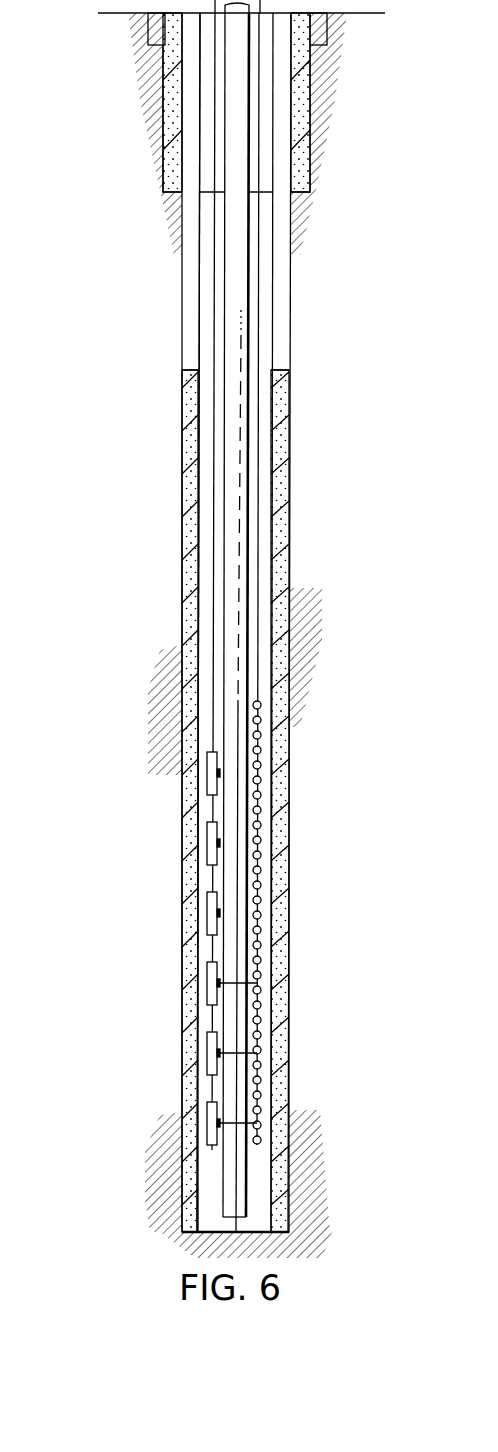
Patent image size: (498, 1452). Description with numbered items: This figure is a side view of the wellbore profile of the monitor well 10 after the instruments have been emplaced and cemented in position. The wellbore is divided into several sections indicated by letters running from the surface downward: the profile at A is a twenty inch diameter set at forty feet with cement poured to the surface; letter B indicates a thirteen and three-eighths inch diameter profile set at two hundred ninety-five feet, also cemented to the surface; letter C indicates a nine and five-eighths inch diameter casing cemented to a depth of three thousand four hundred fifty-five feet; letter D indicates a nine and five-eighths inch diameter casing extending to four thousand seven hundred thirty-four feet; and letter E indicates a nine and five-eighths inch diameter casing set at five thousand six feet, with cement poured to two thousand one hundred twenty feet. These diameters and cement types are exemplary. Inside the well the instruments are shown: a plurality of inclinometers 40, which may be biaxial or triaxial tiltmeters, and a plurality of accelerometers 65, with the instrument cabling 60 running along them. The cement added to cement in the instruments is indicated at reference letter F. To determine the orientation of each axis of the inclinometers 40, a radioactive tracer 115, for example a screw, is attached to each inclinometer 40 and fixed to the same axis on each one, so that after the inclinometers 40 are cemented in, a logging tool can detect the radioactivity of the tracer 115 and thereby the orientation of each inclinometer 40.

The monitor well 10 is at (320, 225).
The inclinometer 40 is at (207, 984).
The instrument cabling 60 is at (200, 507).
The accelerometer 65 is at (318, 872).
The radioactive tracer 115 is at (313, 1114).
The wellbore profile section A is at (138, 33).
The wellbore profile section B is at (152, 177).
The wellbore profile section C is at (172, 640).
The wellbore profile section D is at (170, 1103).
The wellbore profile section E is at (170, 1212).
The cement for cementing in the instruments F is at (215, 313).